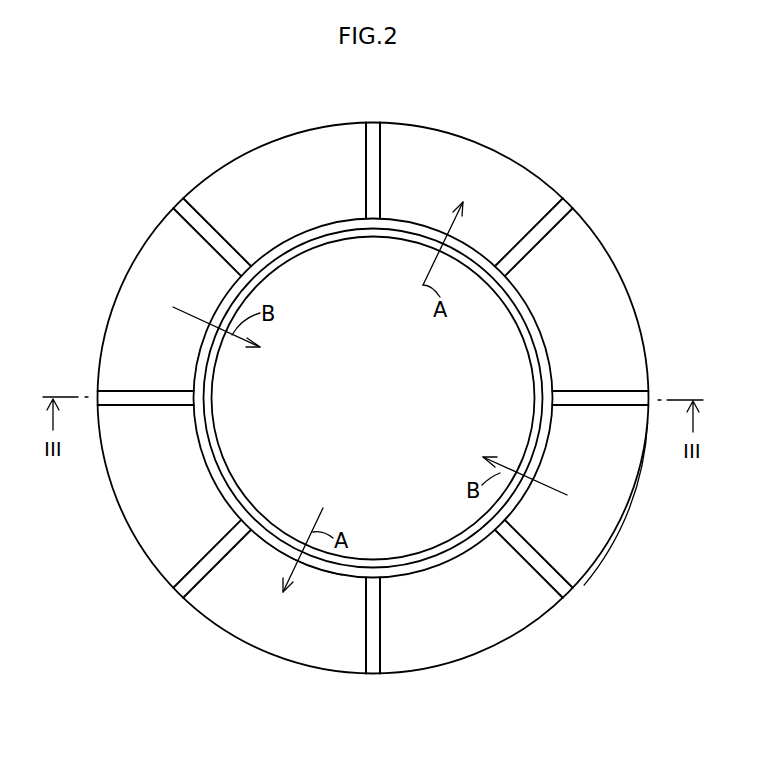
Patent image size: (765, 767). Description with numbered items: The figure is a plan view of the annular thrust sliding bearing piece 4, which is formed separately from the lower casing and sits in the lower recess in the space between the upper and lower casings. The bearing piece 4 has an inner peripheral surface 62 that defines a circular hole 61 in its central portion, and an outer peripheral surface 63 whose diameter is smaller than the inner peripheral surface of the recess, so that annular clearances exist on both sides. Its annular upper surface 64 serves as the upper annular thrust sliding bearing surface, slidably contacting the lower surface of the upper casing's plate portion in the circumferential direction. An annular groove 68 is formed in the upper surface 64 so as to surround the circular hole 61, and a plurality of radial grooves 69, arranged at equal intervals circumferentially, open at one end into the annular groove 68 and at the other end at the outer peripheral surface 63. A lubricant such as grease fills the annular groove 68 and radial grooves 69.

The thrust sliding bearing piece 4 is at (467, 129).
The circular hole 61 is at (483, 347).
The inner peripheral surface 62 is at (302, 250).
The outer peripheral surface 63 is at (598, 233).
The annular upper surface 64 is at (583, 526).
The annular groove 68 is at (268, 540).
The radial grooves 69 is at (373, 158).